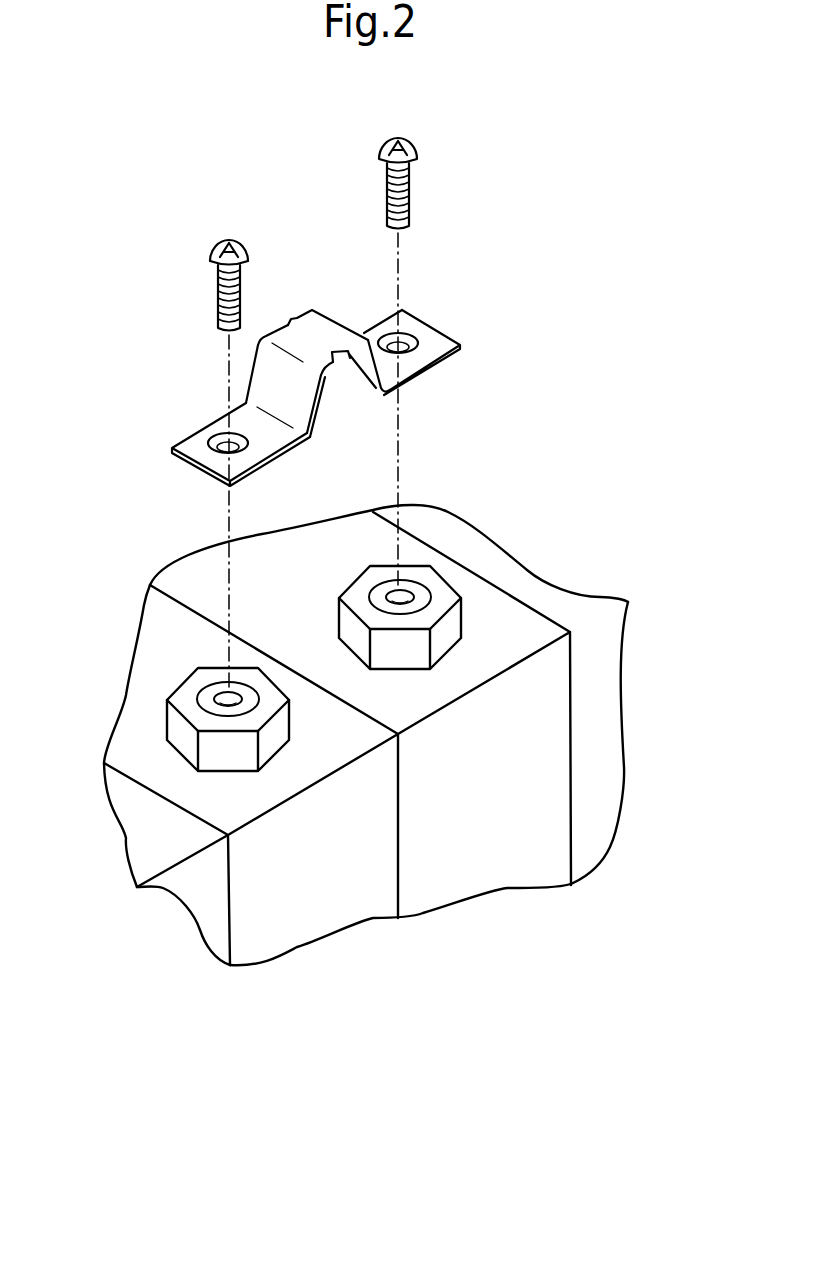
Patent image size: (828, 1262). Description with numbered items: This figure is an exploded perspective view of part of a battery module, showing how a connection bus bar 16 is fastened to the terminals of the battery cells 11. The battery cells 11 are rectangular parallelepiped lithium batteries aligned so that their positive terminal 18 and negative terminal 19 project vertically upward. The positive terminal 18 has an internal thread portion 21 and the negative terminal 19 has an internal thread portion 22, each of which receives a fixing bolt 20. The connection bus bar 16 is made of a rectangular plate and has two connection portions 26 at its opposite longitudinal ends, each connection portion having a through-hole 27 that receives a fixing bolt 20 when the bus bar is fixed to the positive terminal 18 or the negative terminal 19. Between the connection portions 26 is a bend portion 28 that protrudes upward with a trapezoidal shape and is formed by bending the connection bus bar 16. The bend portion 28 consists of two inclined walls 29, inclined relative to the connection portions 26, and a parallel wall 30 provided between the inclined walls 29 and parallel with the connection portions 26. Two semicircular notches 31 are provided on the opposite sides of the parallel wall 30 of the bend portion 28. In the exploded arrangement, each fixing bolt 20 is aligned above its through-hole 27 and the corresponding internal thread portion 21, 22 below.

The battery cell 11 is at (208, 892).
The connection bus bar 16 is at (311, 321).
The positive terminal 18 is at (167, 680).
The negative terminal 19 is at (461, 566).
The fixing bolt 20 is at (413, 175).
The internal thread portion 21 is at (222, 690).
The internal thread portion 22 is at (400, 590).
The connection portion 26 is at (311, 402).
The through-hole 27 is at (222, 458).
The bend portion 28 is at (305, 296).
The inclined wall 29 is at (358, 372).
The parallel wall 30 is at (328, 337).
The semicircular notch 31 is at (286, 321).